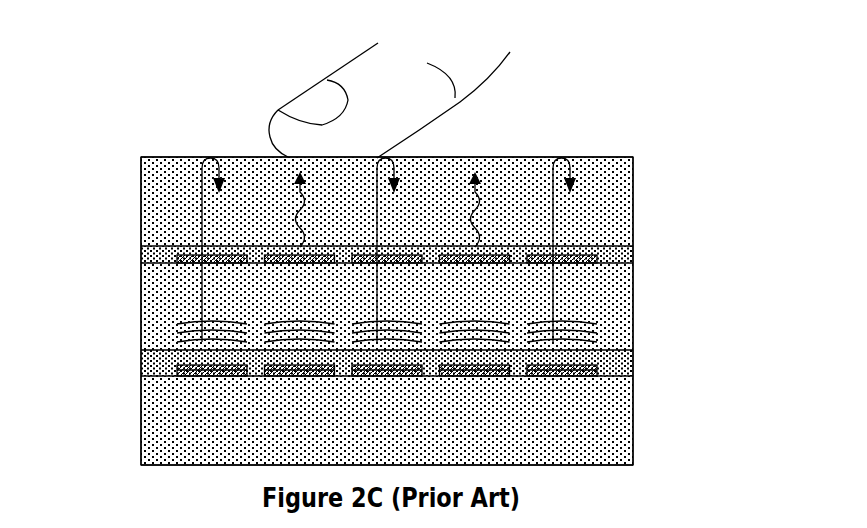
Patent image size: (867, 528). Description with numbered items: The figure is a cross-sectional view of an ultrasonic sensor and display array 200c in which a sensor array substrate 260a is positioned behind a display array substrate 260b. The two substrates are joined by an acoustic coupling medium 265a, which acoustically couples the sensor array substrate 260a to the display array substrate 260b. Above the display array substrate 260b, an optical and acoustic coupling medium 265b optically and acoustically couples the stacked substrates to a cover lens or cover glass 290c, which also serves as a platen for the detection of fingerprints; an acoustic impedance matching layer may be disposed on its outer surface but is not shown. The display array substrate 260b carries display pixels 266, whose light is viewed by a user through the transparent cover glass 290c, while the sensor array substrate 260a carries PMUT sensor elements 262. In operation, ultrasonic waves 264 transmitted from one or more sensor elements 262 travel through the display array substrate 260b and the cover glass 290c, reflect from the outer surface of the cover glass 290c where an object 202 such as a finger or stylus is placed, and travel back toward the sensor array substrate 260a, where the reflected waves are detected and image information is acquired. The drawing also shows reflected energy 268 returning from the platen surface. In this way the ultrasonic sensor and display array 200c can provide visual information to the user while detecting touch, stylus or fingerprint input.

The ultrasonic sensor and display array 200c is at (152, 52).
The object 202 is at (338, 65).
The reflected light 268 is at (297, 197).
The ultrasonic waves 264 is at (202, 162).
The display pixels 266 is at (278, 263).
The sensor elements 262 is at (188, 367).
The cover glass 290c is at (672, 157).
The optical and acoustic coupling medium 265b is at (672, 247).
The display array substrate 260b is at (672, 264).
The acoustic coupling medium 265a is at (672, 351).
The sensor array substrate 260a is at (672, 377).